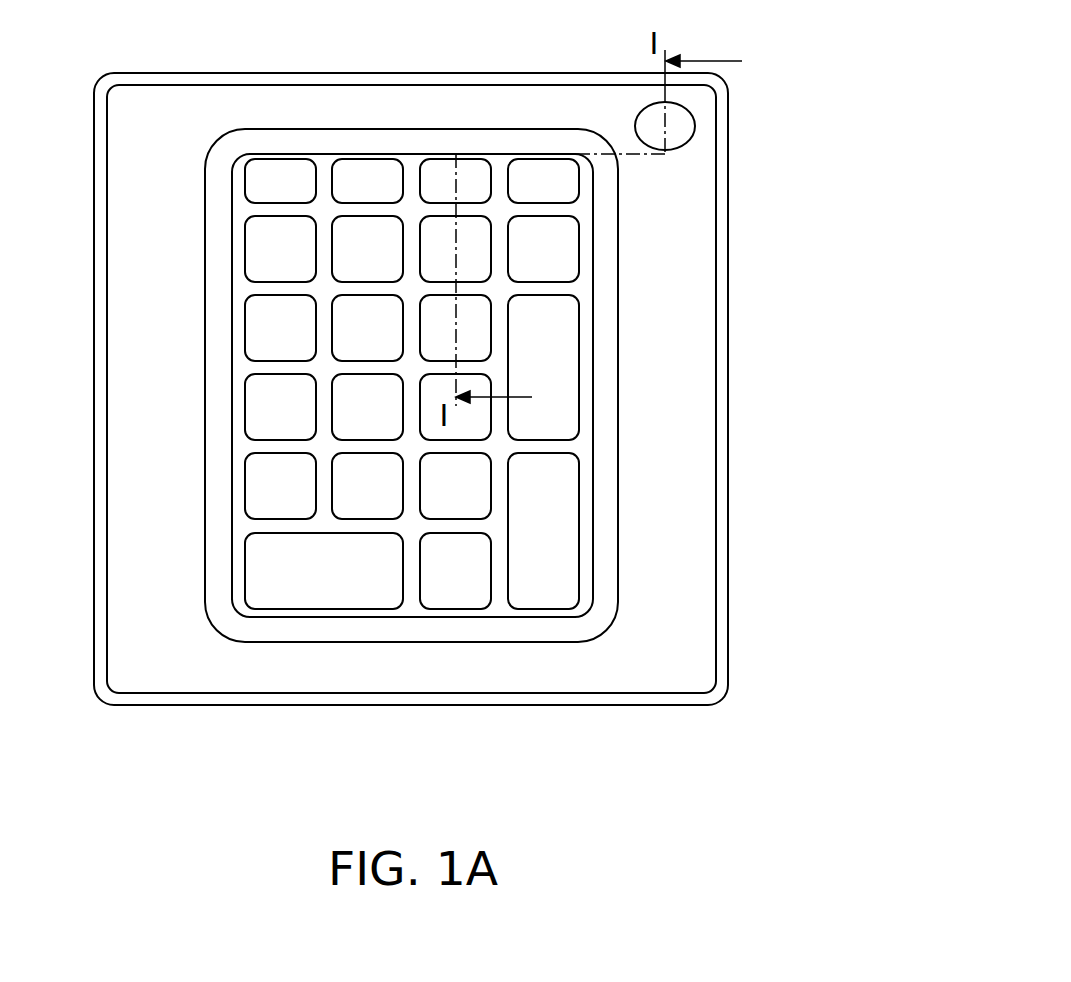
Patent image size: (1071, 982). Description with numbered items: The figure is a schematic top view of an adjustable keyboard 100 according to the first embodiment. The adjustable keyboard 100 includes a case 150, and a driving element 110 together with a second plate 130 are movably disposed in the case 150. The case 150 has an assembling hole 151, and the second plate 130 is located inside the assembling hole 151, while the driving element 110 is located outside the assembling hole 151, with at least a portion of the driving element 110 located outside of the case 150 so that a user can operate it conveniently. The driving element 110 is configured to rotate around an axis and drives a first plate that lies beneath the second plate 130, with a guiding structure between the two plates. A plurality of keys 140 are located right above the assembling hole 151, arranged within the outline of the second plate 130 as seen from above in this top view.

The adjustable keyboard 100 is at (764, 758).
The driving element 110 is at (683, 126).
The second plate 130 is at (582, 447).
The keys 140 is at (441, 240).
The case 150 is at (682, 562).
The assembling hole 151 is at (232, 485).